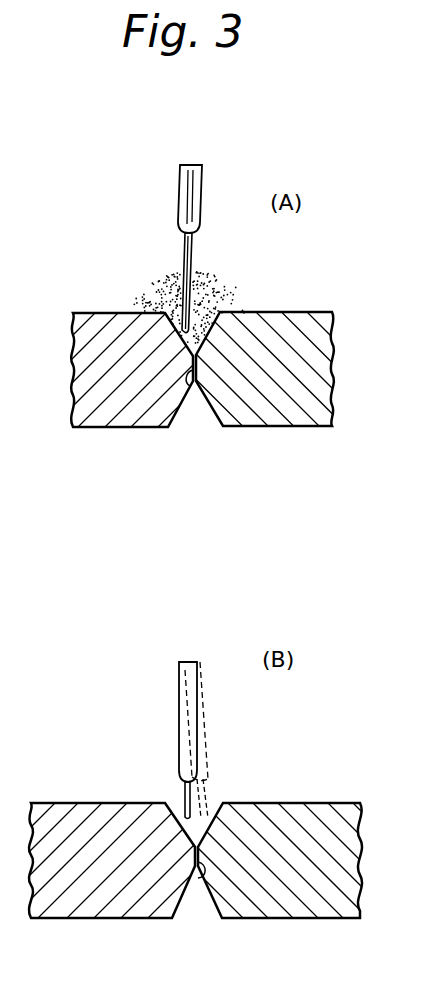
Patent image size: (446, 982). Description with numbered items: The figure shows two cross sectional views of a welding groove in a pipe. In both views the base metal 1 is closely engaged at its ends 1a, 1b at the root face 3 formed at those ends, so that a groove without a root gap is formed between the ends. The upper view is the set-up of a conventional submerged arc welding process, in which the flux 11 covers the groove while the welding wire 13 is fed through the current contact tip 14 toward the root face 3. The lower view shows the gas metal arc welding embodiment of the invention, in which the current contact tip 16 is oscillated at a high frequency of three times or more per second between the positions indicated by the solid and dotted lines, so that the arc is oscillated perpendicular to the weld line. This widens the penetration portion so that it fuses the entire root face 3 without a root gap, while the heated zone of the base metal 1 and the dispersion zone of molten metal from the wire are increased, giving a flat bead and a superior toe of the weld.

The base metal 1 is at (223, 632).
The end of base metal 1a is at (150, 408).
The end of base metal 1b is at (222, 395).
The root face 3 is at (190, 387).
The flux 11 is at (214, 290).
The welding wire 13 is at (184, 258).
The current contact tip 14 is at (180, 205).
The current contact tip 16 is at (180, 747).